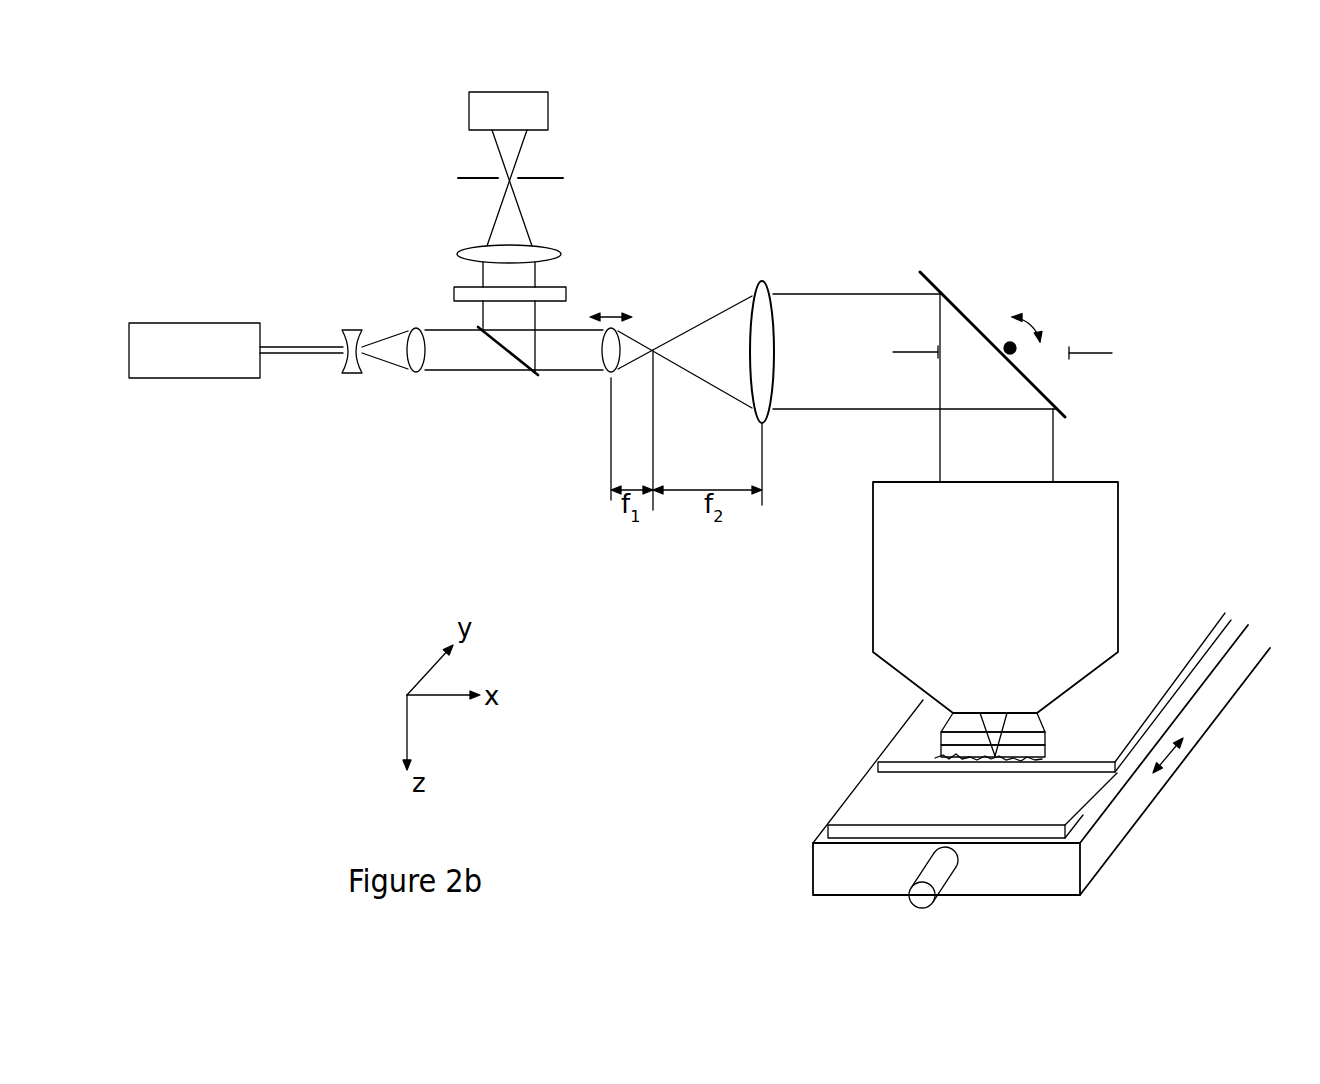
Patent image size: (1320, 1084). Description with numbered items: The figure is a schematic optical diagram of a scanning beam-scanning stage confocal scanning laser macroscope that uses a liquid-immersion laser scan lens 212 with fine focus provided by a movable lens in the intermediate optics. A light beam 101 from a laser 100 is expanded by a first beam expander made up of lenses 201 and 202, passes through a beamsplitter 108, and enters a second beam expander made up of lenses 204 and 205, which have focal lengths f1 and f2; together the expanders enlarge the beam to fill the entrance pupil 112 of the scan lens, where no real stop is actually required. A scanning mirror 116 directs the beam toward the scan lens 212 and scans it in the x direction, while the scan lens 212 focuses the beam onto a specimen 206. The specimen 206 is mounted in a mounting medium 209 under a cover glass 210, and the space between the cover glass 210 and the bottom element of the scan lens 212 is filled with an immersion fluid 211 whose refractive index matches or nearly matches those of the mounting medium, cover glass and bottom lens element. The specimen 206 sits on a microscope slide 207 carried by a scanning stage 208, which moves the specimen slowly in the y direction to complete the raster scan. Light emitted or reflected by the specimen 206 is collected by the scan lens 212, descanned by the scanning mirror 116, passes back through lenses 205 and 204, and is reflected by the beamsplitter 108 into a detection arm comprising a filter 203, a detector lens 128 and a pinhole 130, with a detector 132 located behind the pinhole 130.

The laser 100 is at (160, 323).
The light beam 101 is at (287, 348).
The lens 201 is at (348, 376).
The lens 202 is at (408, 375).
The beamsplitter 108 is at (530, 379).
The filter 203 is at (566, 294).
The detector lens 128 is at (561, 255).
The pinhole 130 is at (563, 178).
The detector 132 is at (548, 110).
The lens 204 is at (609, 379).
The lens 205 is at (774, 424).
The scanning mirror 116 is at (937, 282).
The entrance pupil 112 is at (1085, 353).
The liquid-immersion laser scan lens 212 is at (1118, 570).
The immersion fluid 211 is at (1040, 710).
The cover glass 210 is at (1045, 738).
The mounting medium 209 is at (1045, 750).
The specimen 206 is at (935, 752).
The microscope slide 207 is at (1075, 817).
The scanning stage 208 is at (1100, 842).